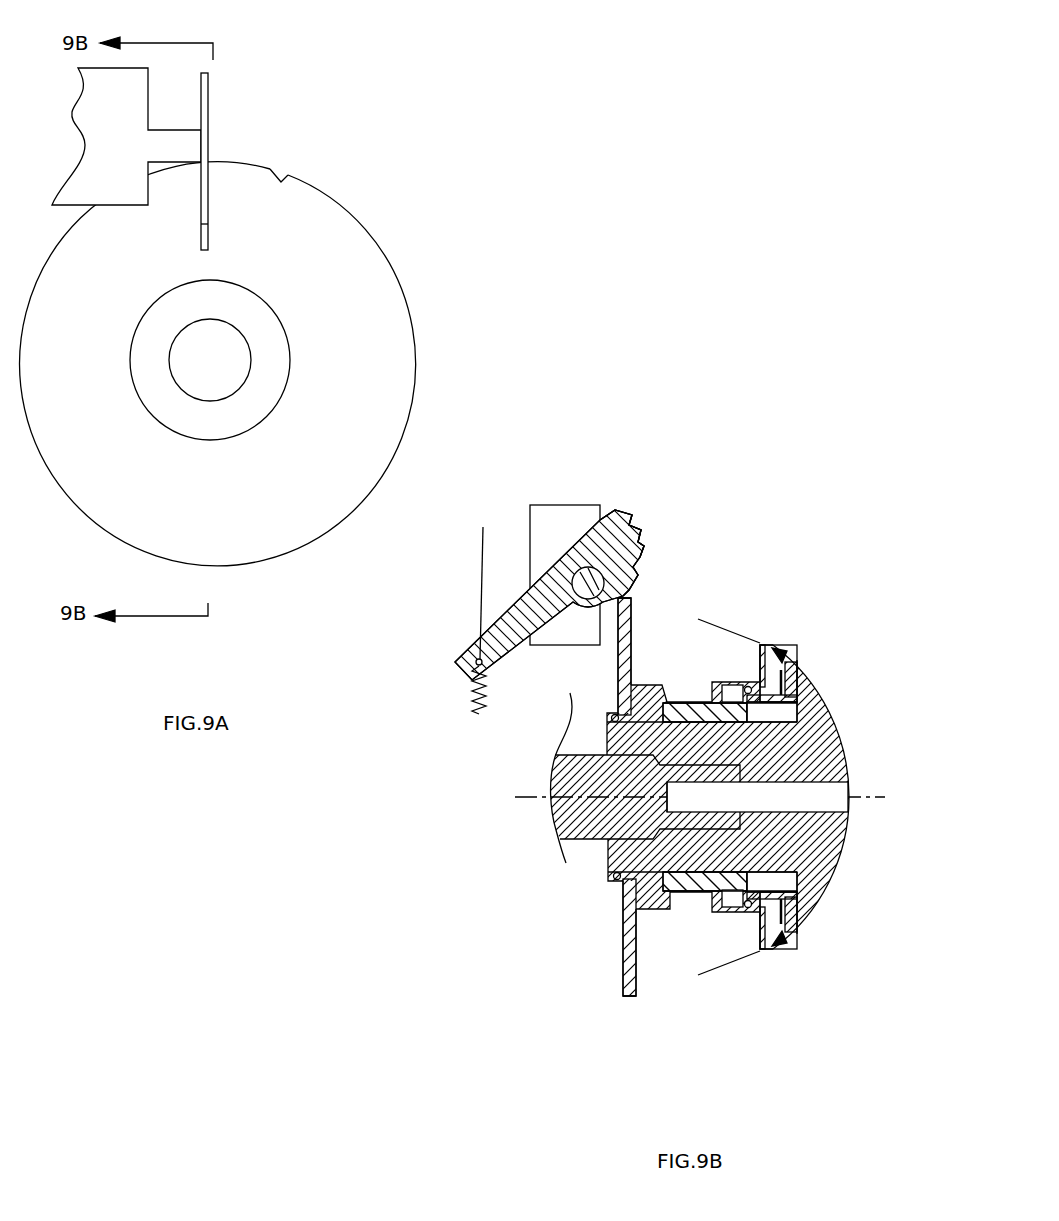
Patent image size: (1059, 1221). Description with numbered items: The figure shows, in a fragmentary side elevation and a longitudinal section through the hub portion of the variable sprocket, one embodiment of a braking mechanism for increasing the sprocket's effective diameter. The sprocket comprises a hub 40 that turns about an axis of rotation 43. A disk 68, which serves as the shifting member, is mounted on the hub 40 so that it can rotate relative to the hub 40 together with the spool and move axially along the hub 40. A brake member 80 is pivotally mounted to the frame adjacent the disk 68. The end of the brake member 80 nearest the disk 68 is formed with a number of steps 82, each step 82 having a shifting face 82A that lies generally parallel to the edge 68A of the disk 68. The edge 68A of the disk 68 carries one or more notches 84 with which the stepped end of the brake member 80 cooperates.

In FIG. 9B, the hub 40 is at (610, 862).
In FIG. 9B, the axis of rotation 43 is at (533, 793).
In FIG. 9A, the disk 68 is at (370, 428).
In FIG. 9B, the disk 68 is at (623, 947).
In FIG. 9A, the edge of disk 68A is at (328, 199).
In FIG. 9B, the edge of disk 68A is at (633, 999).
In FIG. 9A, the brake member 80 is at (210, 107).
In FIG. 9B, the brake member 80 is at (528, 597).
In FIG. 9B, the steps 82 is at (645, 520).
In FIG. 9B, the shifting face 82A is at (641, 539).
In FIG. 9A, the notches 84 is at (272, 172).
In FIG. 9B, the notches 84 is at (632, 596).